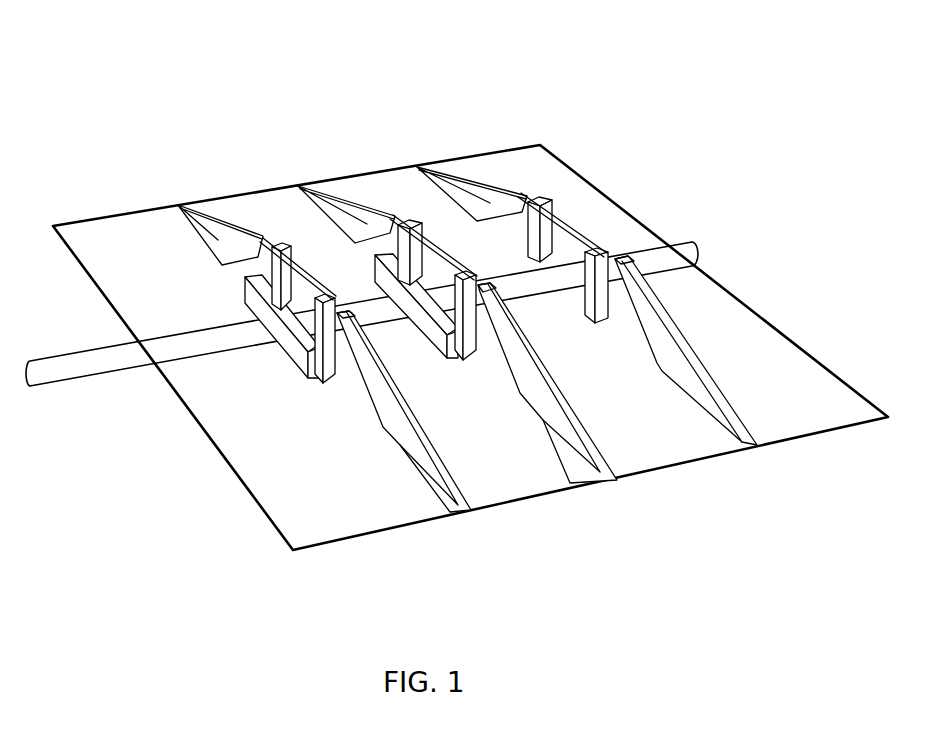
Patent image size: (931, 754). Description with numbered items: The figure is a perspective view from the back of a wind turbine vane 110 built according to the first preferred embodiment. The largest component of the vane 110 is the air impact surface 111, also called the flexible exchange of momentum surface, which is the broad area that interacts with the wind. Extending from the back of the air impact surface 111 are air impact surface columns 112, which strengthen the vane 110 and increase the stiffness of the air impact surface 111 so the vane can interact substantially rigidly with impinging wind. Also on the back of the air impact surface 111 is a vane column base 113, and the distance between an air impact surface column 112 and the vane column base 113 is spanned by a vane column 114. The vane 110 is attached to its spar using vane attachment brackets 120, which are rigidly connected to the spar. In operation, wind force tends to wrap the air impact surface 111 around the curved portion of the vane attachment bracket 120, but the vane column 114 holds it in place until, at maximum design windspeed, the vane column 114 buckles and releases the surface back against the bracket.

The vane 110 is at (457, 288).
The air impact surface 111 is at (583, 205).
The air impact surface column 112 is at (180, 204).
The vane column base 113 is at (288, 248).
The vane column 114 is at (258, 260).
The vane attachment bracket 120 is at (313, 297).